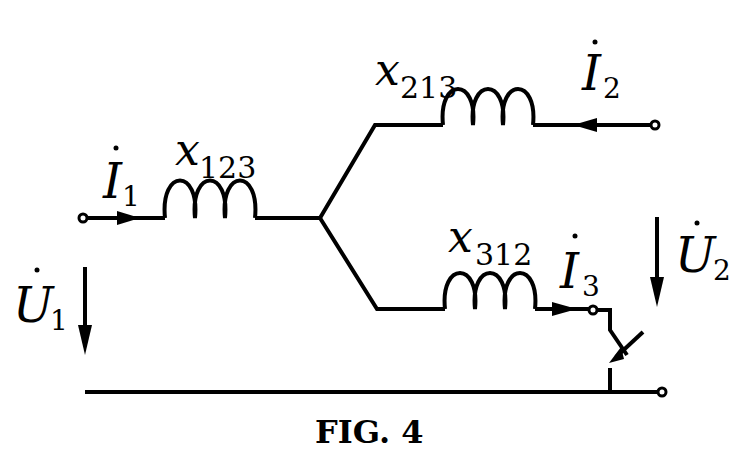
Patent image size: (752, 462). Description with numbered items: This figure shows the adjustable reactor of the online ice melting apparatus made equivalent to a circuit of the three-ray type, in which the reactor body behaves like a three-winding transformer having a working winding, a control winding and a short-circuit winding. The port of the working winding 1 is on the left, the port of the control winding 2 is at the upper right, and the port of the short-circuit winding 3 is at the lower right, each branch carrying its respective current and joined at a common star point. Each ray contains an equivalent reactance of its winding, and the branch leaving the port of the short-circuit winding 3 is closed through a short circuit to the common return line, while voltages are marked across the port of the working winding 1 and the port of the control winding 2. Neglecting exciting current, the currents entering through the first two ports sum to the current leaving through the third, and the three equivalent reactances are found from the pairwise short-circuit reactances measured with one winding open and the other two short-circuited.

The port of the working winding 1 is at (66, 200).
The port of the control winding 2 is at (679, 123).
The port of the short-circuit winding 3 is at (621, 307).